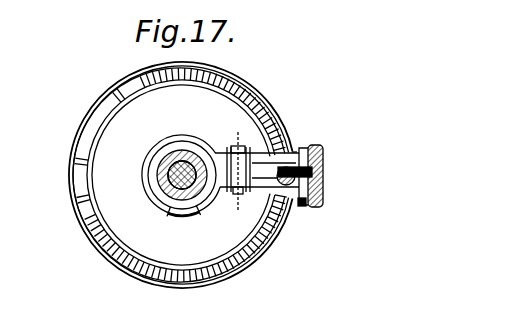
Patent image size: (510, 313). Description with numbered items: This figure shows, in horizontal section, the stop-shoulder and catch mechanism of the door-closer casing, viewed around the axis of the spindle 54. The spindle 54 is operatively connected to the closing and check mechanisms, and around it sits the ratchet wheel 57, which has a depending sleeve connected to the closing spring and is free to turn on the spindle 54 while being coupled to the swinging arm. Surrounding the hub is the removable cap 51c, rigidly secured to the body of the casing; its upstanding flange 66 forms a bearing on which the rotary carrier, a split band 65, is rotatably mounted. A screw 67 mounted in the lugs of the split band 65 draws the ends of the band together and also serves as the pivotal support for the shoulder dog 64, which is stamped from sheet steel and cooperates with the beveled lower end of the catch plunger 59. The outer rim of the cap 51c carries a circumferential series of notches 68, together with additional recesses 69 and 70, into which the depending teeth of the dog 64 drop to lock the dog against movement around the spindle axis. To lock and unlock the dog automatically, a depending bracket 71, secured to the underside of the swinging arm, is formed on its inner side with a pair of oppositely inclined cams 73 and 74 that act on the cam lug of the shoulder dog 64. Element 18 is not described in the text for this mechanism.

The removable cap 51c is at (97, 122).
The notches 68 is at (248, 246).
The additional recesses 70 is at (111, 89).
The additional recesses 69 is at (82, 203).
The ratchet wheel 57 is at (162, 160).
The spindle 54 is at (168, 176).
The split band 65 is at (176, 210).
The upstanding flange 66 is at (200, 210).
The screw 67 is at (230, 147).
The bolt 18 is at (235, 168).
The plunger 59 is at (312, 172).
The dog 64 is at (296, 152).
The cam 73 is at (312, 148).
The depending bracket 71 is at (320, 192).
The cam 74 is at (300, 206).